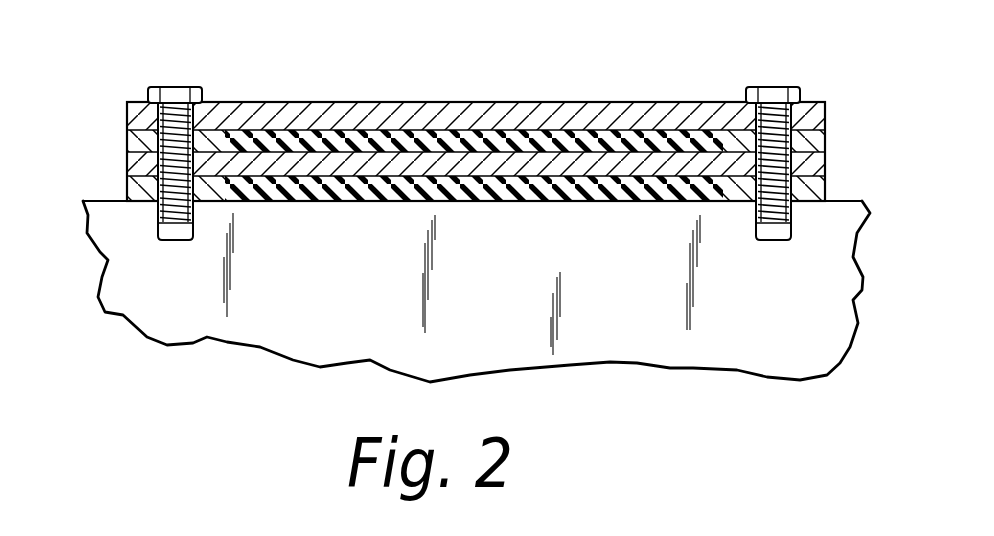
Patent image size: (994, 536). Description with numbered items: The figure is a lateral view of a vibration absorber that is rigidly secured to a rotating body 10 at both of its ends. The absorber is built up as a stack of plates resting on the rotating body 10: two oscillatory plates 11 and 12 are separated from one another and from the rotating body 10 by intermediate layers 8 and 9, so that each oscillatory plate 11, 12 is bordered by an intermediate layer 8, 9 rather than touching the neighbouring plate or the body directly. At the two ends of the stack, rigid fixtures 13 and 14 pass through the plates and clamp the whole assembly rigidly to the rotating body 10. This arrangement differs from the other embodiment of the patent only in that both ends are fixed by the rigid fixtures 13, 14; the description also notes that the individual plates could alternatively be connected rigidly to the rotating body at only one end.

The intermediate layer 8 is at (396, 186).
The intermediate layer 9 is at (398, 138).
The rotating body 10 is at (605, 305).
The oscillatory plate 11 is at (560, 115).
The oscillatory plate 12 is at (573, 165).
The rigid fixture 13 is at (739, 94).
The rigid fixture 14 is at (209, 94).